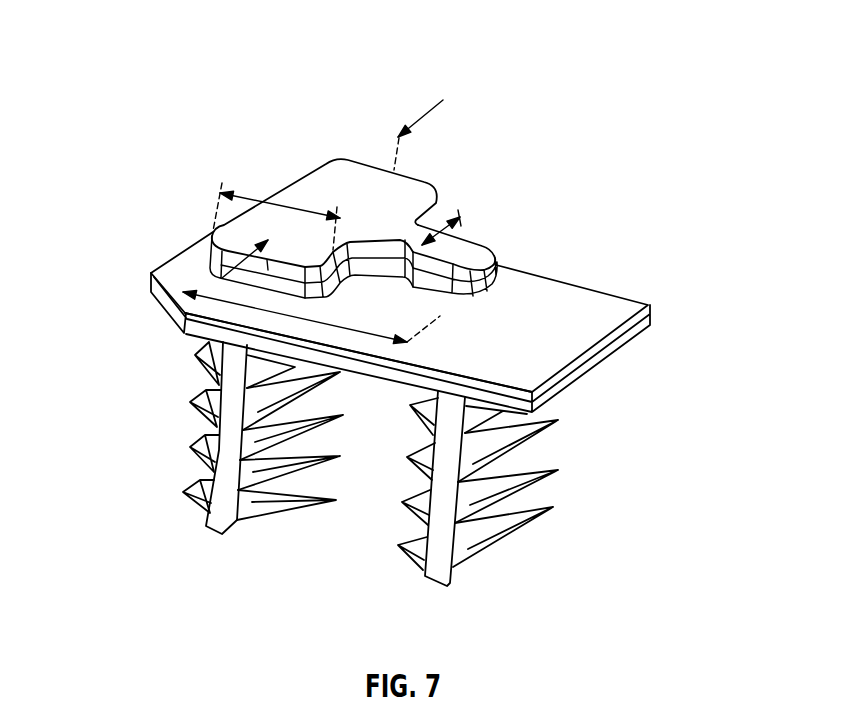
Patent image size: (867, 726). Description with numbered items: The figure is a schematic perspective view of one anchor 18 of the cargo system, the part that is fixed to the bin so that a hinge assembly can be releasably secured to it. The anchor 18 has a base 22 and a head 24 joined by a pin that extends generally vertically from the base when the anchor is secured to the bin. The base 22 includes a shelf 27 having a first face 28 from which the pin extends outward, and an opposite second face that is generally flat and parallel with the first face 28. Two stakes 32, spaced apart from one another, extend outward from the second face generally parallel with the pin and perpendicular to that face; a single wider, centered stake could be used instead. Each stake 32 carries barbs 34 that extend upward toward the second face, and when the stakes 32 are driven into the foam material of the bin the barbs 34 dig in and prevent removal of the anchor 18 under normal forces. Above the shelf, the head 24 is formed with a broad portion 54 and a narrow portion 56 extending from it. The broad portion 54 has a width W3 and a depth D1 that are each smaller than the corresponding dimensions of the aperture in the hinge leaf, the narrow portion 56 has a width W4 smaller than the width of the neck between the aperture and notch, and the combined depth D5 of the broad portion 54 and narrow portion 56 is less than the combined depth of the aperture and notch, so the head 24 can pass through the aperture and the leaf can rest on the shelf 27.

The anchor 18 is at (402, 351).
The base 22 is at (407, 322).
The head 24 is at (377, 206).
The shelf 27 is at (580, 300).
The first face 28 is at (528, 303).
The stakes 32 is at (220, 534).
The barbs 34 is at (197, 462).
The broad portion 54 is at (353, 177).
The narrow portion 56 is at (460, 247).
The depth of the broad portion D1 is at (247, 192).
The depth of the broad and narrow portions together D5 is at (178, 312).
The width of the broad portion W3 is at (423, 116).
The width of the narrow portion W4 is at (442, 220).